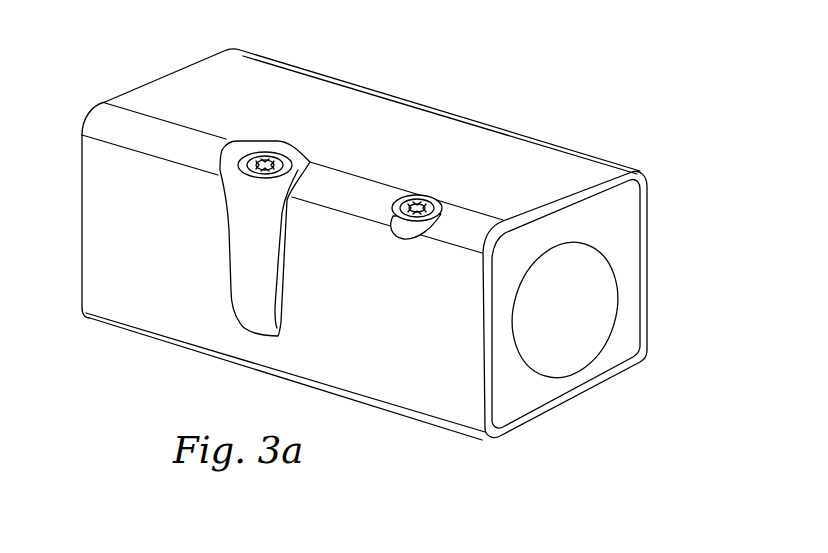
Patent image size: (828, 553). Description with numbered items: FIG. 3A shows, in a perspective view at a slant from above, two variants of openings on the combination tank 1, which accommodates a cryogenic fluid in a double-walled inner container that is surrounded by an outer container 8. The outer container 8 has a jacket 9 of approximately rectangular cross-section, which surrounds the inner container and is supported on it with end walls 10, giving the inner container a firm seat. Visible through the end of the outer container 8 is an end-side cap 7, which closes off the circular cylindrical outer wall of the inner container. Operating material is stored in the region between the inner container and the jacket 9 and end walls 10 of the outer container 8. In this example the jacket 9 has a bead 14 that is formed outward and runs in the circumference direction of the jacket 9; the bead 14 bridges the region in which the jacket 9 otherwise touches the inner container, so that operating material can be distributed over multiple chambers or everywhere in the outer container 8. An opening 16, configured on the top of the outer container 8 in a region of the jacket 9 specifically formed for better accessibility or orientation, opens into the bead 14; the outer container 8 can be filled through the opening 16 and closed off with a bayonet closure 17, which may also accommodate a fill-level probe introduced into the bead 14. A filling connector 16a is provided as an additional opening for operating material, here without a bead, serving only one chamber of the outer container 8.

The combination tank 1 is at (388, 228).
The end-side cap 7 is at (590, 303).
The outer container 8 is at (130, 289).
The jacket 9 is at (641, 172).
The end wall 10 is at (618, 213).
The bead 14 is at (298, 201).
The opening 16 is at (254, 133).
The filling connector 16a is at (418, 188).
The bayonet closure 17 is at (292, 156).